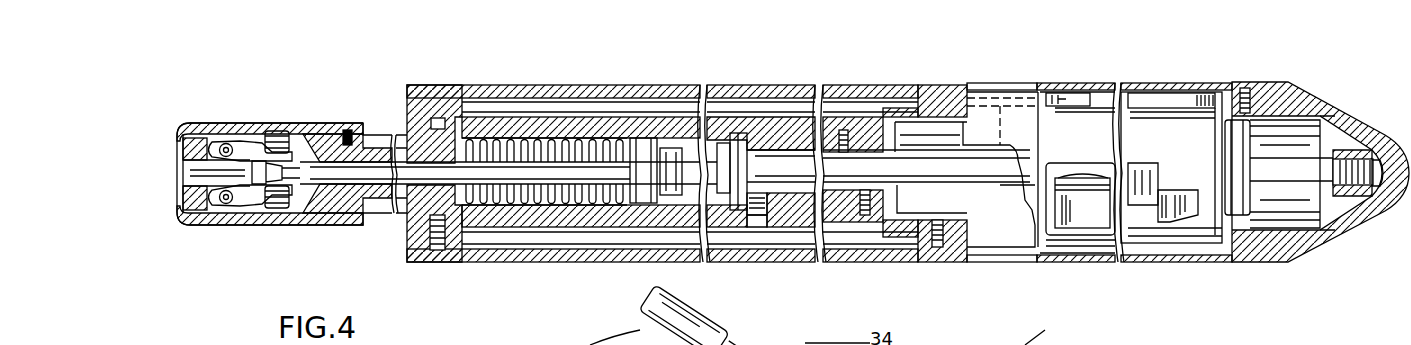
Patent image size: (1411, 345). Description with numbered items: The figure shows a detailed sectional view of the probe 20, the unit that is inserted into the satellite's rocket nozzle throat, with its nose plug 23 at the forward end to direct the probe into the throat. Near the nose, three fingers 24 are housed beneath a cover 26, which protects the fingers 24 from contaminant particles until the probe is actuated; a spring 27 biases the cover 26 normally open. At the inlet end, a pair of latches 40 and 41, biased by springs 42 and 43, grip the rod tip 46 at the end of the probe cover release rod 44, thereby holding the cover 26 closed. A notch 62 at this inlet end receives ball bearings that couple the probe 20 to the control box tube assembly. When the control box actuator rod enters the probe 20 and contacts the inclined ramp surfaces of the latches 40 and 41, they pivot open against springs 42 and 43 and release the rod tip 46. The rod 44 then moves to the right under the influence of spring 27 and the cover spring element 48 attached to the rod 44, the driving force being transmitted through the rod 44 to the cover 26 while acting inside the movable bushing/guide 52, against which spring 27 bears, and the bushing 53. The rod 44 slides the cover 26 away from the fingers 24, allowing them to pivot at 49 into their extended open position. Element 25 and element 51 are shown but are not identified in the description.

The probe 20 is at (1326, 80).
The nose plug 23 is at (1320, 232).
The fingers 24 is at (1160, 105).
The drive block 25 is at (1088, 212).
The cover 26 is at (1181, 262).
The spring 27 is at (578, 144).
The latch 40 is at (244, 200).
The latch 41 is at (236, 140).
The spring 42 is at (281, 212).
The spring 43 is at (277, 136).
The rod 44 is at (940, 165).
The rod tip 46 is at (253, 164).
The cover spring element 48 is at (668, 160).
The pivot 49 is at (1180, 190).
The piston 51 is at (718, 160).
The bushing/guide 52 is at (646, 140).
The bushing 53 is at (738, 200).
The notch 62 is at (383, 131).